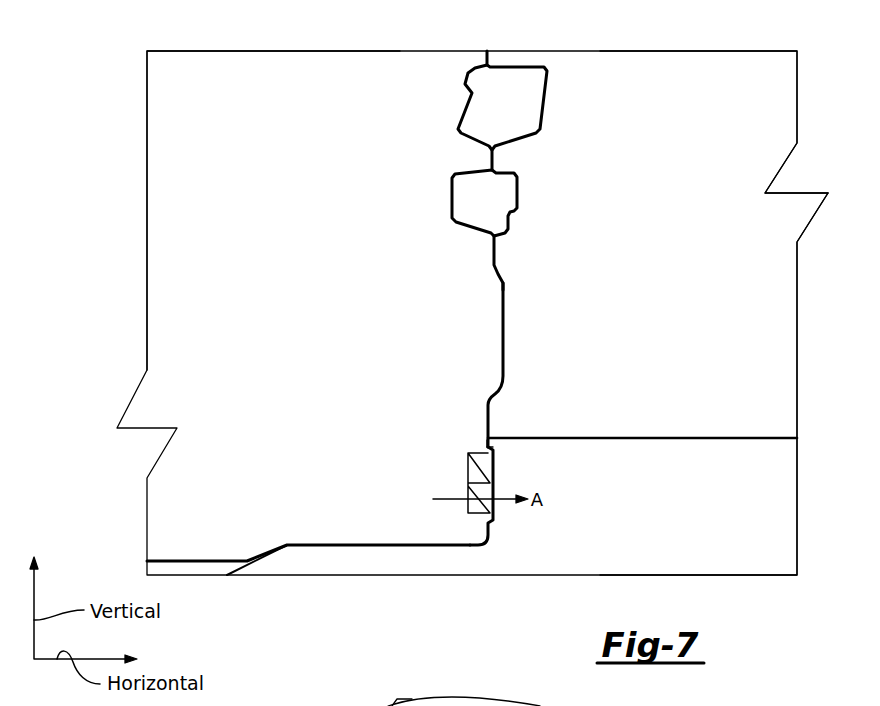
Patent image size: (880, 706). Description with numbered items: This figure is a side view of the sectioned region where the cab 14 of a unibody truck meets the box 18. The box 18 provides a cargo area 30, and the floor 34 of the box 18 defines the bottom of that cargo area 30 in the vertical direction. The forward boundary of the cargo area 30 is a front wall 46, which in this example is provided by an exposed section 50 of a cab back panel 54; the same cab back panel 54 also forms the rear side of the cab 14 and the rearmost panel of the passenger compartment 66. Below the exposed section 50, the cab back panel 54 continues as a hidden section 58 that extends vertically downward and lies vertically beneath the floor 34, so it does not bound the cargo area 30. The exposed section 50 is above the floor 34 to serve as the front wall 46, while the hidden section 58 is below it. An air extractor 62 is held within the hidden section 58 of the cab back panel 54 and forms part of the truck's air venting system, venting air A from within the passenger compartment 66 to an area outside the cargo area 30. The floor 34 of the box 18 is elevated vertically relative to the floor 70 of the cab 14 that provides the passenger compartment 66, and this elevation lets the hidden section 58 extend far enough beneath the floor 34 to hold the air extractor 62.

The cab 14 is at (246, 84).
The box 18 is at (758, 102).
The cargo area 30 is at (758, 324).
The floor 34 is at (650, 437).
The front wall 46 is at (500, 278).
The exposed section 50 is at (532, 249).
The cab back panel 54 is at (471, 365).
The hidden section 58 is at (507, 496).
The air extractor 62 is at (468, 472).
The passenger compartment 66 is at (203, 211).
The floor 70 is at (405, 545).